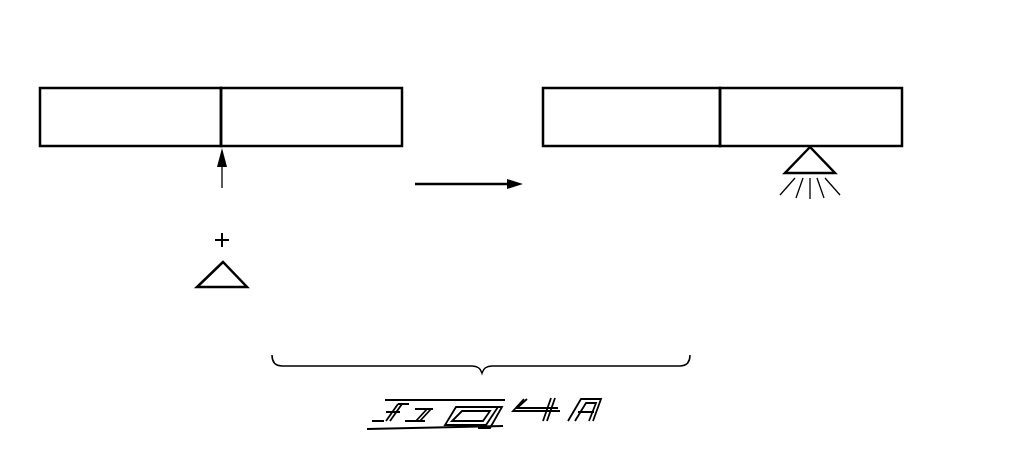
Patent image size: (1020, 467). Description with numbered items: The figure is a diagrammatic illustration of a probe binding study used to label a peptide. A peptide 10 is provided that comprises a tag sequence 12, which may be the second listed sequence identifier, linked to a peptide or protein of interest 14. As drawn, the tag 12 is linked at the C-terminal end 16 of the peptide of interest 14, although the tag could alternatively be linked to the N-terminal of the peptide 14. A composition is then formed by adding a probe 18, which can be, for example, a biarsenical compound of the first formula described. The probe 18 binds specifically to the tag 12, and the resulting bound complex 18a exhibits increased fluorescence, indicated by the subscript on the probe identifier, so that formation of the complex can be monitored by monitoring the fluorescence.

The peptide 10 is at (222, 62).
The tag sequence 12 is at (355, 88).
The peptide or protein of interest 14 is at (143, 88).
The C-terminal end 16 is at (222, 184).
The probe 18 is at (222, 275).
The probe-tag complex with increased fluorescence 18a is at (818, 162).